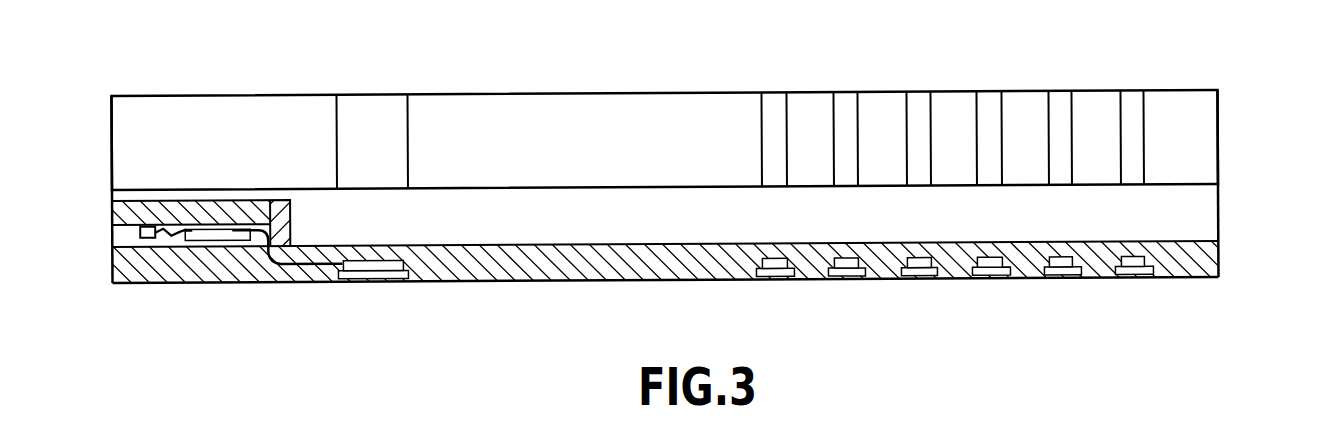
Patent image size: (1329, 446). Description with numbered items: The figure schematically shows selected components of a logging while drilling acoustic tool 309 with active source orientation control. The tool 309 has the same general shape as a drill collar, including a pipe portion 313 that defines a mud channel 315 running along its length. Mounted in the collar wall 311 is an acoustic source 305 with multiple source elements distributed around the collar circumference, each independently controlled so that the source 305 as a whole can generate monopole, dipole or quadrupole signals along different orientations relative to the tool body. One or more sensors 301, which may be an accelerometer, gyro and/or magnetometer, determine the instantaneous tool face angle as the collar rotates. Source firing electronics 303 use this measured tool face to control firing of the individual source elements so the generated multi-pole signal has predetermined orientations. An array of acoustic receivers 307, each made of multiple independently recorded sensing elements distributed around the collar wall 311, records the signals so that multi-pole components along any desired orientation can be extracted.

The sensors 301 is at (140, 239).
The source firing electronics 303 is at (228, 242).
The acoustic source 305 is at (365, 281).
The acoustic receivers 307 is at (780, 282).
The logging while drilling acoustic tool 309 is at (138, 62).
The collar wall 311 is at (1190, 279).
The pipe portion 313 is at (635, 283).
The mud channel 315 is at (1220, 200).